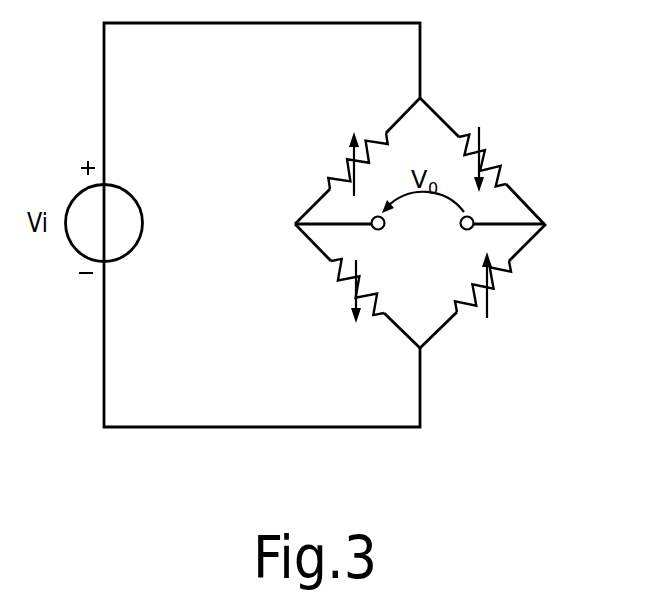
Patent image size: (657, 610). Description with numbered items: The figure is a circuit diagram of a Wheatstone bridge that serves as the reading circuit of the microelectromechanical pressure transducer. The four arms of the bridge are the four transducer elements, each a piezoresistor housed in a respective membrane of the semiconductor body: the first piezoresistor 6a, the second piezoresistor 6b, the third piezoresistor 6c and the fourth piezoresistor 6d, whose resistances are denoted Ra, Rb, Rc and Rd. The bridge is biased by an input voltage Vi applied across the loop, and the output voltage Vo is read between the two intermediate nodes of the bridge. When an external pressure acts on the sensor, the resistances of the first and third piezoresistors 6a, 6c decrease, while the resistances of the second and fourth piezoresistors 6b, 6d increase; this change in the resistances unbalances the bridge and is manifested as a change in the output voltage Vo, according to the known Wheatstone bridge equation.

The first piezoresistor 6a is at (352, 270).
The second piezoresistor 6b is at (350, 165).
The third piezoresistor 6c is at (502, 167).
The fourth piezoresistor 6d is at (500, 285).